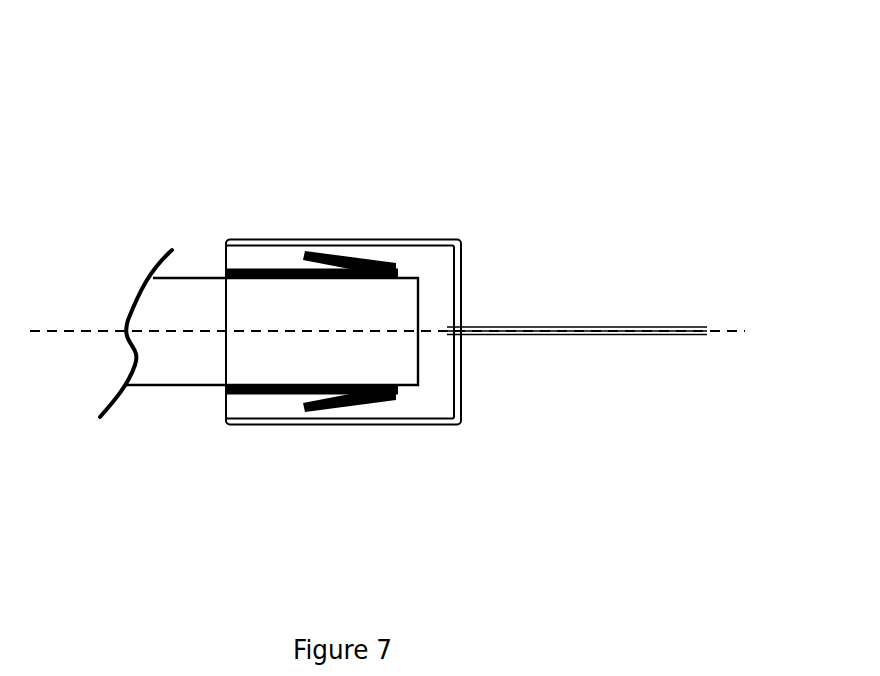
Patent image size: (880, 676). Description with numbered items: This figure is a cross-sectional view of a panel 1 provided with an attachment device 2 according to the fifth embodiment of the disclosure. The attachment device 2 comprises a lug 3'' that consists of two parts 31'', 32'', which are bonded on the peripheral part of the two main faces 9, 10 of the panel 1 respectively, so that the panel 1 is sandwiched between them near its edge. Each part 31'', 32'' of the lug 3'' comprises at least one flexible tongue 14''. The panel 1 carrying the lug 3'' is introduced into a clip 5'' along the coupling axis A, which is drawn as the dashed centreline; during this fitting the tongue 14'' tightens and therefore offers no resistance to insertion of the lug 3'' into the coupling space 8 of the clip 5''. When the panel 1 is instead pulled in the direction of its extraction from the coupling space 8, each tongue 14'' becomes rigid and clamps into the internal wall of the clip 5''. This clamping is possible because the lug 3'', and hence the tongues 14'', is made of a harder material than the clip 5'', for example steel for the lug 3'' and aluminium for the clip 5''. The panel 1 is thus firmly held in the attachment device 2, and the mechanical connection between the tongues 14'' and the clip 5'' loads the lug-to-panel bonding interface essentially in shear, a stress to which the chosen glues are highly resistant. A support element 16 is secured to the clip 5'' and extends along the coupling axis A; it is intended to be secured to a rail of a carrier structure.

The panel 1 is at (188, 306).
The attachment device 2 is at (485, 204).
The lug 3'' is at (381, 144).
The clip 5'' is at (396, 361).
The coupling space 8 is at (432, 395).
The main face of the panel 9 is at (165, 276).
The main face of the panel 10 is at (148, 386).
The flexible tongue 14'' is at (349, 265).
The support element 16 is at (533, 326).
The part of the lug 31'' is at (430, 176).
The part of the lug 32'' is at (293, 439).
The coupling axis A is at (402, 331).